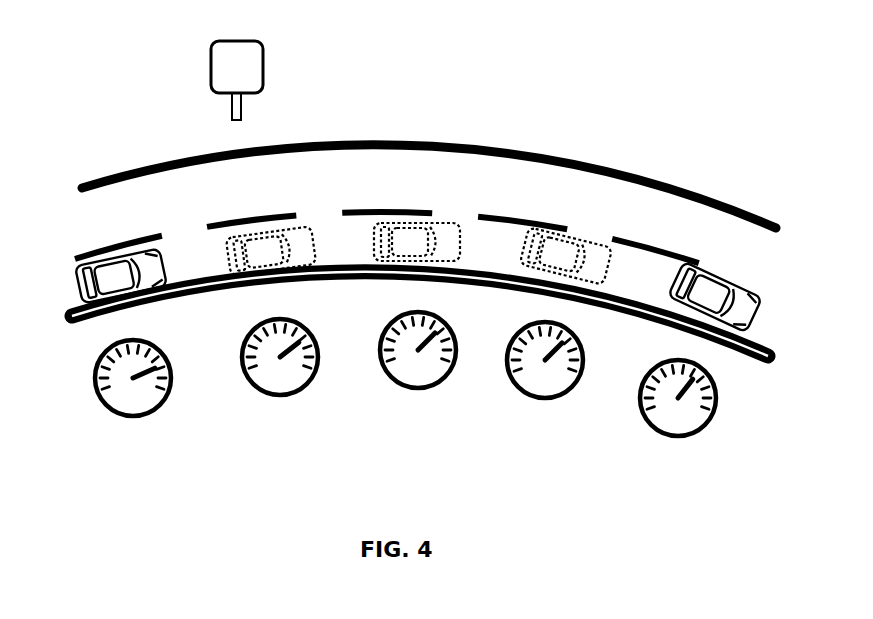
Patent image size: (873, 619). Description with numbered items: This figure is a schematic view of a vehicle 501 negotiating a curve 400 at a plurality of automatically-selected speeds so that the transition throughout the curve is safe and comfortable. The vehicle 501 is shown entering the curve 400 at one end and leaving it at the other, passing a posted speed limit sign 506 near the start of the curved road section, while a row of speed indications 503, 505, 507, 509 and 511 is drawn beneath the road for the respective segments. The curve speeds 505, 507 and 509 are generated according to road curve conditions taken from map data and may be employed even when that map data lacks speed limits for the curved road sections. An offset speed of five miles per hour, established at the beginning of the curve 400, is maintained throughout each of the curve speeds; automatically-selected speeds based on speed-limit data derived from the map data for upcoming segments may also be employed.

The curve 400 is at (363, 140).
The vehicle 501 is at (75, 270).
The speed limit sign 506 is at (233, 41).
The speedometer gauge 75 503 is at (171, 360).
The curve speed 505 is at (316, 345).
The curve speed 507 is at (454, 336).
The curve speed 509 is at (582, 355).
The speedometer gauge 70 511 is at (715, 385).